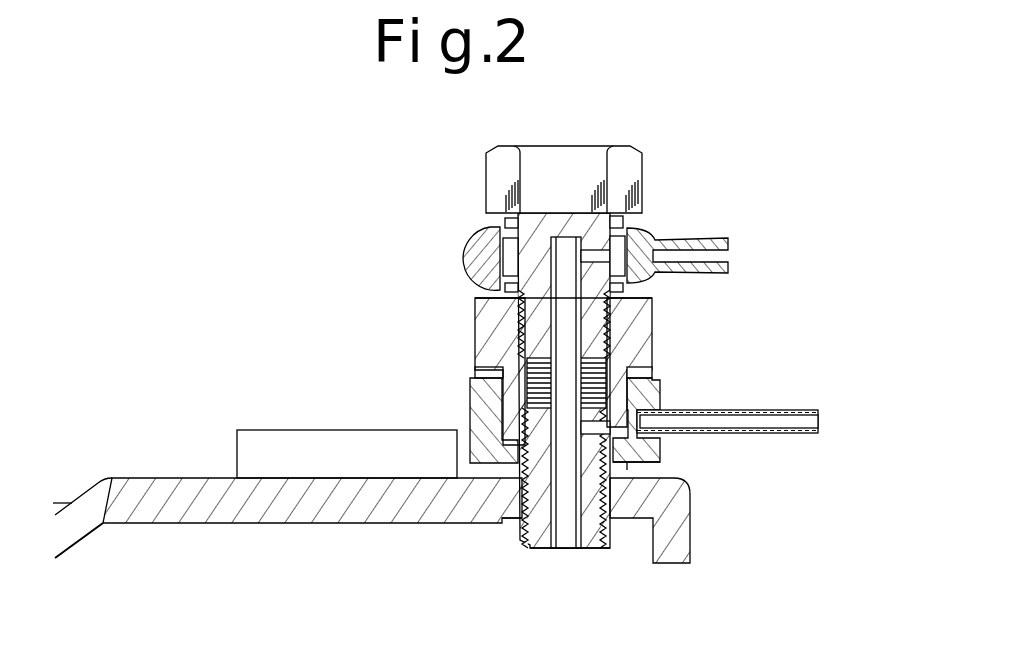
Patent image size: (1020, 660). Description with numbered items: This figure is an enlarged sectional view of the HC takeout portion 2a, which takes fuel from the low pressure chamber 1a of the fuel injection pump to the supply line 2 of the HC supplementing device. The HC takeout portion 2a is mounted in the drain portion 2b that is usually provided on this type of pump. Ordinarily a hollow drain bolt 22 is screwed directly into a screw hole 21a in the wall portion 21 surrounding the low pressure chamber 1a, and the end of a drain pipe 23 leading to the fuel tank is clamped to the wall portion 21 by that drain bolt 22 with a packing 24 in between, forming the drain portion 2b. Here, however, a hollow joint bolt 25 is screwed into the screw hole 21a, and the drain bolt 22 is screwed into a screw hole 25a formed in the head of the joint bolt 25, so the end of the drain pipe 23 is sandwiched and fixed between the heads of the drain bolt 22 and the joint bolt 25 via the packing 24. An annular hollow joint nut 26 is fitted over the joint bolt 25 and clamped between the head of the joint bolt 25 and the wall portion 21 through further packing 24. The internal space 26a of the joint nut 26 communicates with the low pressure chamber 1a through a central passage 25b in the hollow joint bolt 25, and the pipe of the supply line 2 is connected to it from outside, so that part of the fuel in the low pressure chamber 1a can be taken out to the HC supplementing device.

The low pressure chamber 1a is at (165, 536).
The supply line 2 is at (775, 433).
The HC takeout portion 2a is at (370, 320).
The drain portion 2b is at (466, 186).
The wall portion 21 is at (318, 500).
The screw hole 21a is at (525, 515).
The drain bolt 22 is at (625, 180).
The drain pipe 23 is at (708, 240).
The packing 24 is at (505, 225).
The joint bolt 25 is at (640, 345).
The screw hole 25a is at (648, 322).
The passage 25b is at (565, 530).
The joint nut 26 is at (660, 380).
The internal space 26a is at (668, 452).